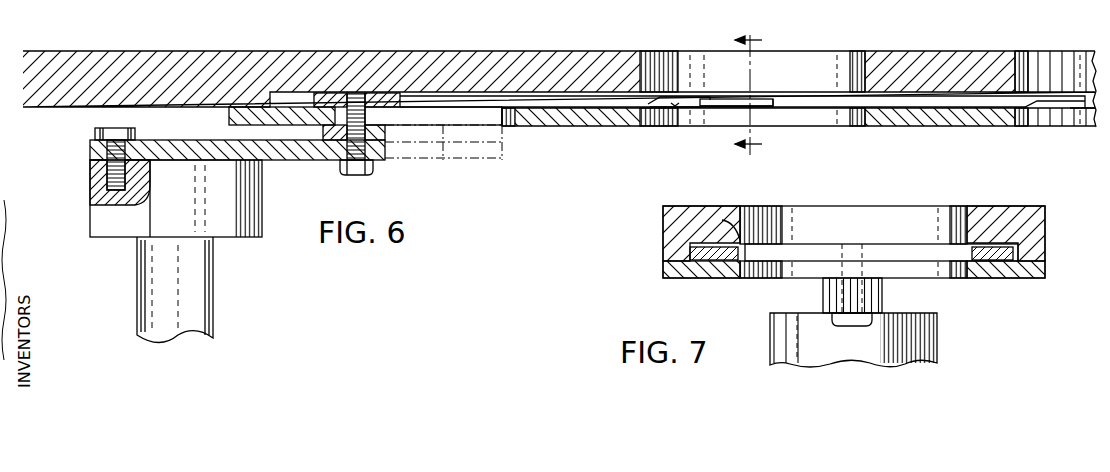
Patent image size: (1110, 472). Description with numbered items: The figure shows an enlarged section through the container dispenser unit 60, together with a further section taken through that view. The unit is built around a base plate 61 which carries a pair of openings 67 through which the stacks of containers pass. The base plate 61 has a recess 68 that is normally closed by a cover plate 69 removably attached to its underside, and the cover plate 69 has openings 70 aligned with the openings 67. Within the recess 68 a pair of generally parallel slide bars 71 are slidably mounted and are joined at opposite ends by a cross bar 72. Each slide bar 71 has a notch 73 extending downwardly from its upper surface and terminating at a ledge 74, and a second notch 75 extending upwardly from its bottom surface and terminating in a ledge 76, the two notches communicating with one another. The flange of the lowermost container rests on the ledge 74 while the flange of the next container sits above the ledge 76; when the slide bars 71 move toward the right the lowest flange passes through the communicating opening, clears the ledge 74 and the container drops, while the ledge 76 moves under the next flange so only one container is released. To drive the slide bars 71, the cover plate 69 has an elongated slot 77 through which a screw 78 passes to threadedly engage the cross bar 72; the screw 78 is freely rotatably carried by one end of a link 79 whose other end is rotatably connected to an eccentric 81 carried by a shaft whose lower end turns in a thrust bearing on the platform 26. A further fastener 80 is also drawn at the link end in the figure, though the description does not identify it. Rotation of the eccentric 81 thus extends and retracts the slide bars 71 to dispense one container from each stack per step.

In FIG. 6, the platform 26 is at (204, 1).
In FIG. 6, the container dispenser unit 60 is at (483, 44).
In FIG. 7, the container dispenser unit 60 is at (699, 198).
In FIG. 6, the base plate 61 is at (303, 58).
In FIG. 7, the base plate 61 is at (672, 220).
In FIG. 6, the openings 67 is at (663, 67).
In FIG. 7, the openings 67 is at (795, 216).
In FIG. 6, the recess 68 is at (274, 94).
In FIG. 7, the recess 68 is at (743, 232).
In FIG. 6, the cover plate 69 is at (577, 117).
In FIG. 7, the cover plate 69 is at (683, 272).
In FIG. 6, the openings 70 is at (655, 122).
In FIG. 7, the openings 70 is at (763, 278).
In FIG. 6, the slide bars 71 is at (830, 100).
In FIG. 7, the slide bars 71 is at (715, 258).
In FIG. 6, the cross bar 72 is at (380, 93).
In FIG. 6, the notch 73 is at (752, 102).
In FIG. 6, the ledge 74 is at (758, 104).
In FIG. 6, the second notch 75 is at (676, 105).
In FIG. 6, the ledge 76 is at (687, 96).
In FIG. 6, the elongated slot 77 is at (472, 118).
In FIG. 6, the screw 78 is at (360, 166).
In FIG. 7, the screw 78 is at (851, 323).
In FIG. 6, the link 79 is at (298, 155).
In FIG. 7, the link 79 is at (880, 302).
In FIG. 6, the adjusting bolt 80 is at (105, 179).
In FIG. 6, the eccentric 81 is at (107, 220).
In FIG. 7, the eccentric 81 is at (922, 346).